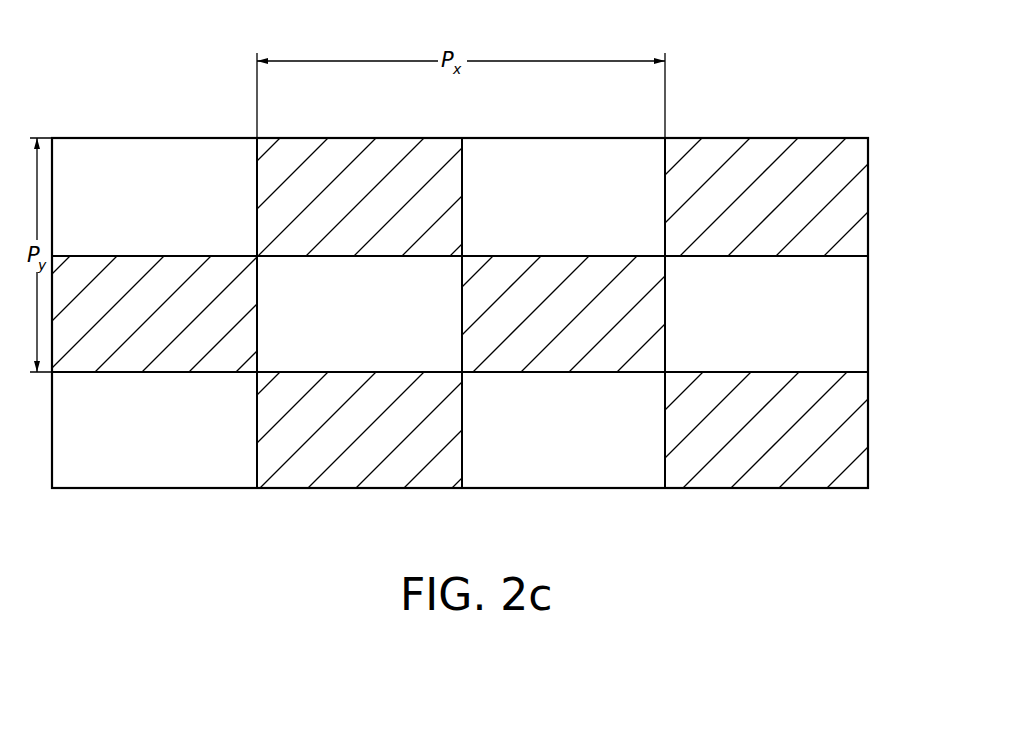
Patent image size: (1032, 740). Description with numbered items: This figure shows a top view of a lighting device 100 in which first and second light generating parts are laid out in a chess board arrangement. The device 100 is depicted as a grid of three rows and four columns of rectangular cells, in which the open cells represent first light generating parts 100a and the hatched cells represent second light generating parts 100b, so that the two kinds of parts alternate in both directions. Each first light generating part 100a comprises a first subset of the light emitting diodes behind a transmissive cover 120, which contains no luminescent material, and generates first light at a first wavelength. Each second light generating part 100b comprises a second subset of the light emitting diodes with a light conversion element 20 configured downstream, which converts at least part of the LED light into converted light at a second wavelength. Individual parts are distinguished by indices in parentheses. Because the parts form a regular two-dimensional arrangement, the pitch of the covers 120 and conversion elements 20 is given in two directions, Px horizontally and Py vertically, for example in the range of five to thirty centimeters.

The lighting device 100 is at (843, 98).
The first light generating part 100a is at (576, 325).
The second light generating part 100b is at (705, 157).
The transmissive cover 120 is at (182, 163).
The light conversion element 20 is at (855, 202).